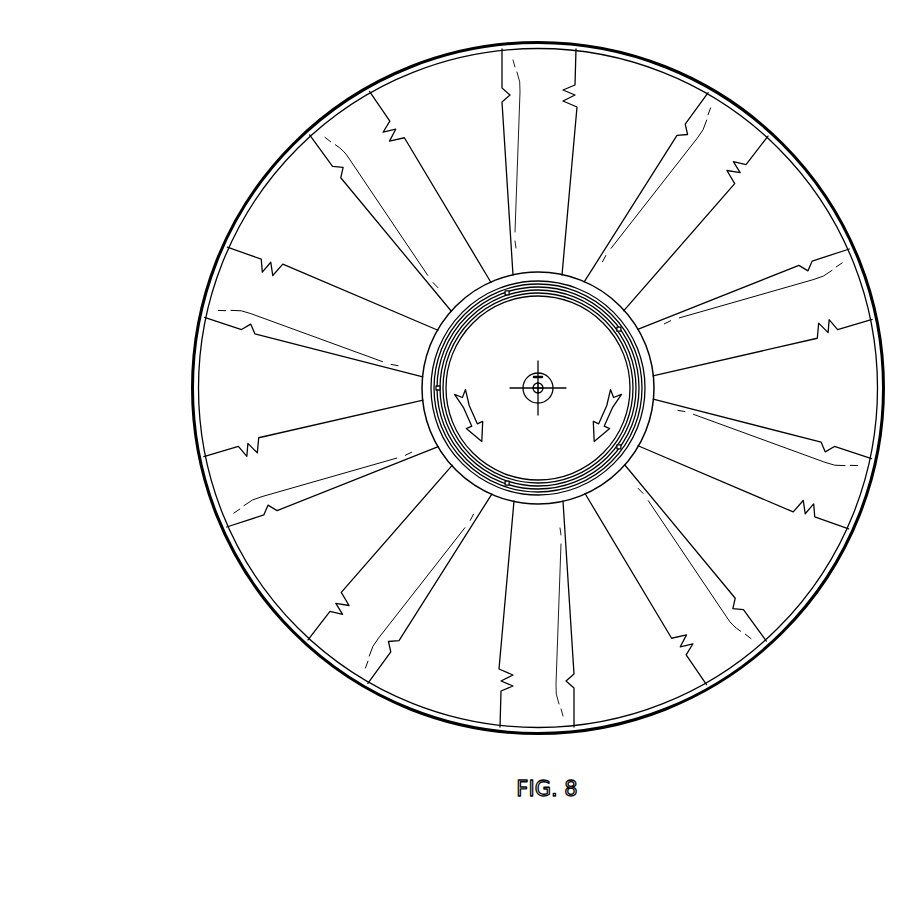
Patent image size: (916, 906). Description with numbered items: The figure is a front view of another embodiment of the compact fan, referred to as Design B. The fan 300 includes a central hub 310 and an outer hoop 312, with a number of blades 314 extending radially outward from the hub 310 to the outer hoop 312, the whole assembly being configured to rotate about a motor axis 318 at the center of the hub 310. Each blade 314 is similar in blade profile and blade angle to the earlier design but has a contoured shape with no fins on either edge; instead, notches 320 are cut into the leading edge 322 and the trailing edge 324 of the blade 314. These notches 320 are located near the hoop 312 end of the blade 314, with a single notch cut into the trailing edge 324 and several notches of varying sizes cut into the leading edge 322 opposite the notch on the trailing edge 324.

The fan 300 is at (210, 165).
The hub 310 is at (573, 335).
The outer hoop 312 is at (632, 57).
The blade 314 is at (302, 447).
The motor axis 318 is at (541, 394).
The notches 320 is at (735, 607).
The leading edge 322 is at (362, 558).
The trailing edge 324 is at (408, 633).